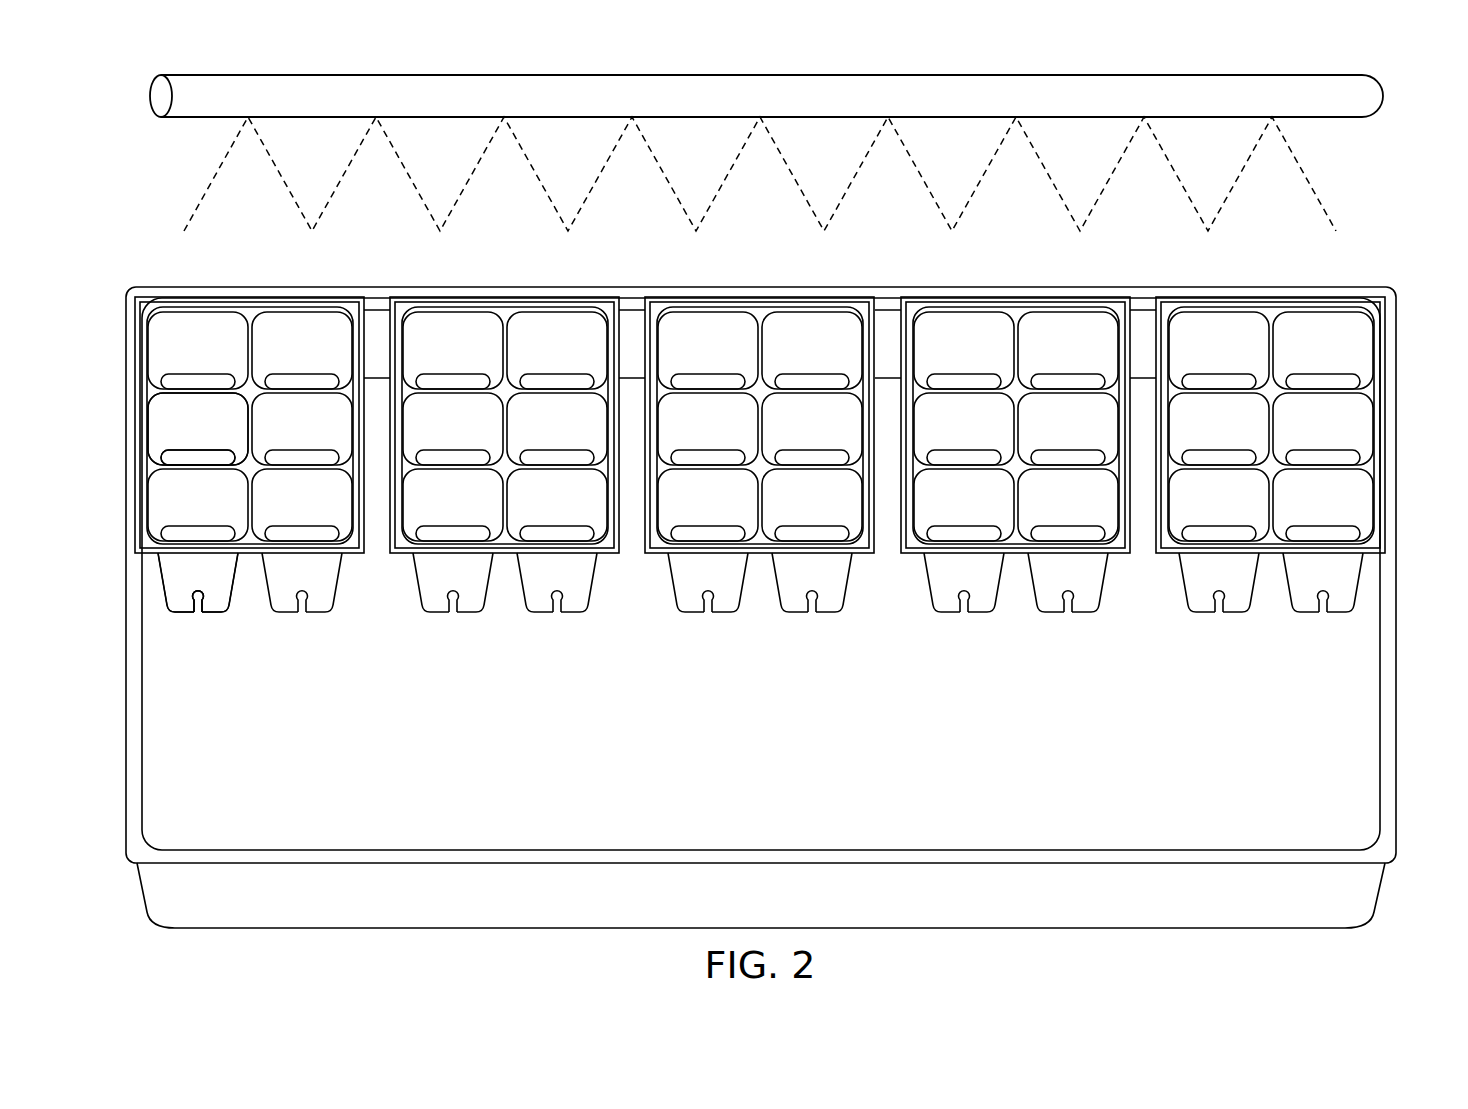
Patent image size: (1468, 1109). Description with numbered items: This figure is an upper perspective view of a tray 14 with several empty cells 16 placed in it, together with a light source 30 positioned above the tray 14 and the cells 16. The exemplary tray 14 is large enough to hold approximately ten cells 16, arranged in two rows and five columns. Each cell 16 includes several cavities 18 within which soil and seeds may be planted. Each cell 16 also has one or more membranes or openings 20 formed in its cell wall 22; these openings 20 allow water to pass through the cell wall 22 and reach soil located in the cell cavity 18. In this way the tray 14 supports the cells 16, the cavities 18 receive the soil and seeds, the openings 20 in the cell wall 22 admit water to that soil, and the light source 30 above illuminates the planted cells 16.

The tray 14 is at (1403, 288).
The cell 16 is at (760, 422).
The cavity 18 is at (216, 428).
The opening 20 is at (198, 613).
The cell wall 22 is at (187, 582).
The light source 30 is at (1345, 96).